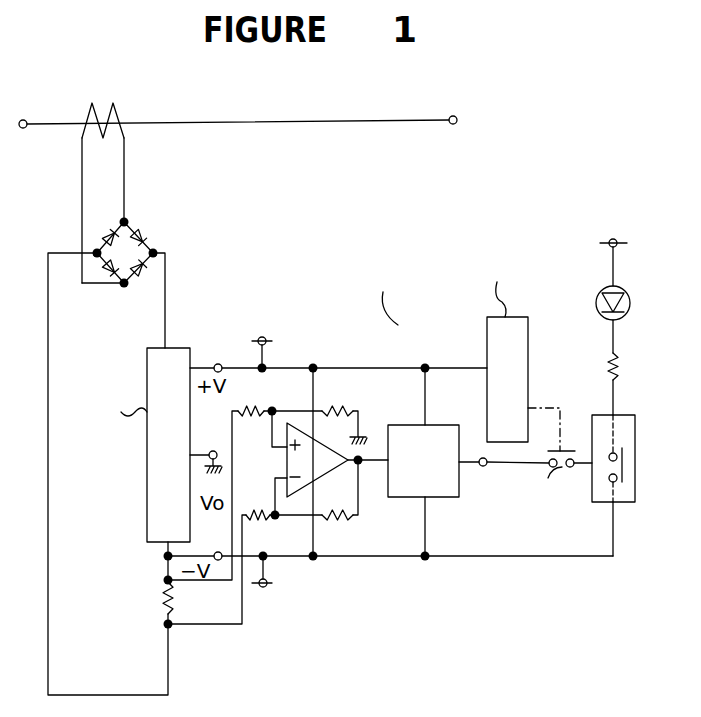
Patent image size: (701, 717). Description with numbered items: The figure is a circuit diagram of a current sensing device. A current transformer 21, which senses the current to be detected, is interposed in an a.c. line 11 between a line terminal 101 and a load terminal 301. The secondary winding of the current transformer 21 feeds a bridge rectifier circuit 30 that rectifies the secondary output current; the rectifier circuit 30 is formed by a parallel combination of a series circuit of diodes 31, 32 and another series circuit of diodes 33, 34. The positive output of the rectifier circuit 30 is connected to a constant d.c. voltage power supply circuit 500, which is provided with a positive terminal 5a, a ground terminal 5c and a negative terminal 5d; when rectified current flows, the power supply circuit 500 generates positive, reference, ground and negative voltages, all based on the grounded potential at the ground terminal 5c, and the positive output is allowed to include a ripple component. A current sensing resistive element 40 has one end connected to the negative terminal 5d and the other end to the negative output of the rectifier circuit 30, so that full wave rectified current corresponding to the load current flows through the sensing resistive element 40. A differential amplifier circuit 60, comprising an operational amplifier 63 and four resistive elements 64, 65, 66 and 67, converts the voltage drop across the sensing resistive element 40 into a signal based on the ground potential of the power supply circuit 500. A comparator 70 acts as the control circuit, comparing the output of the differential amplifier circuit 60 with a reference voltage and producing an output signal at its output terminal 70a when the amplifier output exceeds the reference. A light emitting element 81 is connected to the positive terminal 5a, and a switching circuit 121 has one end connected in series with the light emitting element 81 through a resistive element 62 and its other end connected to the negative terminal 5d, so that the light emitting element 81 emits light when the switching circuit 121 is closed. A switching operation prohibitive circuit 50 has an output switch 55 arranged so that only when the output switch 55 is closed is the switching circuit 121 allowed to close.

The a.c. line 11 is at (258, 121).
The load terminal 301 is at (27, 119).
The line terminal 101 is at (452, 115).
The current transformer 21 is at (121, 112).
The bridge rectifier circuit 30 is at (124, 254).
The diode 31 is at (106, 231).
The diode 32 is at (148, 237).
The diode 33 is at (105, 272).
The diode 34 is at (146, 266).
The constant d.c. voltage power supply circuit 500 is at (147, 470).
The current sensing resistive element 40 is at (163, 602).
The positive terminal 5a is at (260, 337).
The ground terminal 5c is at (217, 455).
The negative terminal 5d is at (263, 588).
The resistive element 64 is at (245, 405).
The resistive element 66 is at (337, 405).
The resistive element 65 is at (262, 522).
The resistive element 67 is at (338, 522).
The differential amplifier circuit 60 is at (344, 423).
The operational amplifier 63 is at (320, 467).
The comparator 70 is at (408, 425).
The output terminal 70a is at (484, 467).
The switching operation prohibitive circuit 50 is at (487, 332).
The output switch 55 is at (562, 483).
The light emitting element 81 is at (597, 296).
The resistive element 62 is at (608, 365).
The switching circuit 121 is at (592, 487).